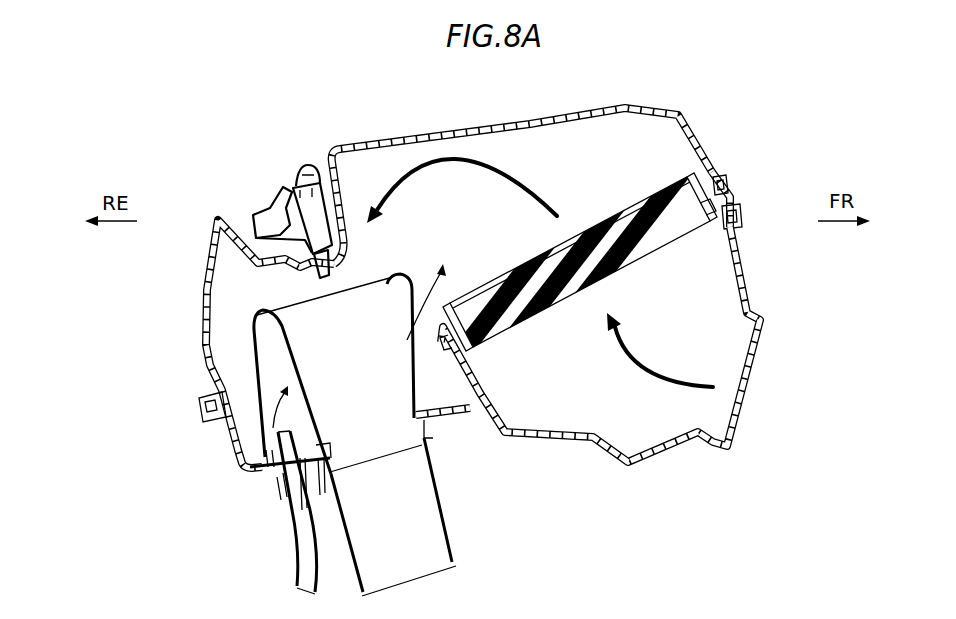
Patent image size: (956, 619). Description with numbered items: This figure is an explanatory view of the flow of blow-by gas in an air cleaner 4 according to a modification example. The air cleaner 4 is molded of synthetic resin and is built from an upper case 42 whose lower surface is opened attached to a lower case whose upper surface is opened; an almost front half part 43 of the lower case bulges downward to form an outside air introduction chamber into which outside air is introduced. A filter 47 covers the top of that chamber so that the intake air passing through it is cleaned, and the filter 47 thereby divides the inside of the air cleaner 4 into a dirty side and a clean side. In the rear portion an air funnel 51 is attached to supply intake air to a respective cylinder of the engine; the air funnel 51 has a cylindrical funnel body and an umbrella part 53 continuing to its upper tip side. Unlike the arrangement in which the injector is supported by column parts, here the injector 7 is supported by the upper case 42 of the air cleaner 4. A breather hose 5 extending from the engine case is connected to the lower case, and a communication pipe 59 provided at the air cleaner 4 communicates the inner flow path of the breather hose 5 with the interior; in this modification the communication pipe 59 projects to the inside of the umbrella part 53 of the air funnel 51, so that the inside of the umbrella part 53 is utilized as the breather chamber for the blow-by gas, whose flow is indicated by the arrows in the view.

The air cleaner 4 is at (716, 127).
The upper case 42 is at (581, 110).
The front half part 43 is at (744, 275).
The filter 47 is at (583, 234).
The breather hose 5 is at (298, 534).
The injector 7 is at (272, 210).
The air funnel 51 is at (393, 252).
The umbrella part 53 is at (258, 335).
The communication pipe 59 is at (271, 460).